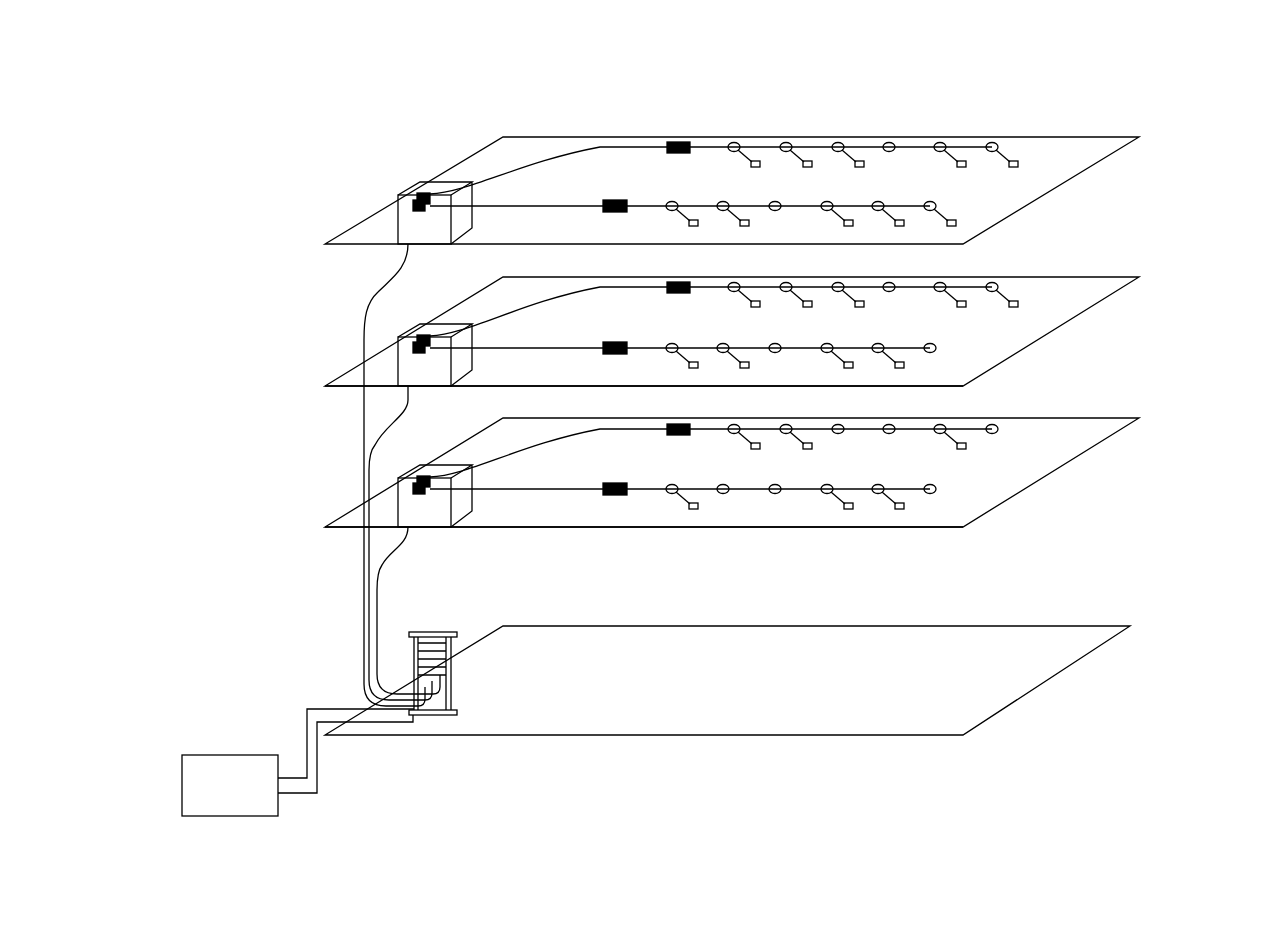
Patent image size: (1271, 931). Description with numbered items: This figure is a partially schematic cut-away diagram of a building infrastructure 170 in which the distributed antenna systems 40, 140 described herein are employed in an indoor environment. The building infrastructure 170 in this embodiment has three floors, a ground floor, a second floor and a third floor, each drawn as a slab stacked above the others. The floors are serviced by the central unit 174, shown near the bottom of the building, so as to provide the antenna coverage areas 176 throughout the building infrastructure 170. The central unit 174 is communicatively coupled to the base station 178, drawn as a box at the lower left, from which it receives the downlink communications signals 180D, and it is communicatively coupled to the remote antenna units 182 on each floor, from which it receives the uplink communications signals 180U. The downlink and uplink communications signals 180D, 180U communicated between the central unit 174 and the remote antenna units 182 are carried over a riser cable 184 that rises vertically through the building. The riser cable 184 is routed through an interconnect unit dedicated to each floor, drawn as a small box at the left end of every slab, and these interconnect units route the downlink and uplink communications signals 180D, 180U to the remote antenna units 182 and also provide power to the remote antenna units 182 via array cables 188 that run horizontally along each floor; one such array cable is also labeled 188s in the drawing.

The DAS 40 is at (711, 437).
The DAS 140 is at (857, 82).
The building infrastructure 170 is at (1090, 527).
The central unit 174 is at (458, 677).
The antenna coverage areas 176 is at (935, 263).
The base station 178 is at (246, 797).
The uplink communications signals 180U is at (303, 699).
The downlink communications signals 180D is at (322, 794).
The remote antenna units 182 is at (960, 158).
The riser cable 184 is at (362, 608).
The array cables 188 is at (630, 146).
The distribution cable splitter 188s is at (654, 293).